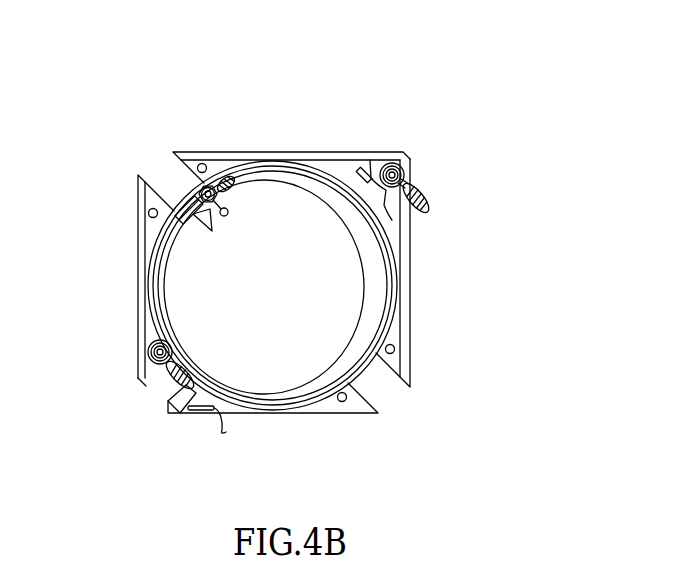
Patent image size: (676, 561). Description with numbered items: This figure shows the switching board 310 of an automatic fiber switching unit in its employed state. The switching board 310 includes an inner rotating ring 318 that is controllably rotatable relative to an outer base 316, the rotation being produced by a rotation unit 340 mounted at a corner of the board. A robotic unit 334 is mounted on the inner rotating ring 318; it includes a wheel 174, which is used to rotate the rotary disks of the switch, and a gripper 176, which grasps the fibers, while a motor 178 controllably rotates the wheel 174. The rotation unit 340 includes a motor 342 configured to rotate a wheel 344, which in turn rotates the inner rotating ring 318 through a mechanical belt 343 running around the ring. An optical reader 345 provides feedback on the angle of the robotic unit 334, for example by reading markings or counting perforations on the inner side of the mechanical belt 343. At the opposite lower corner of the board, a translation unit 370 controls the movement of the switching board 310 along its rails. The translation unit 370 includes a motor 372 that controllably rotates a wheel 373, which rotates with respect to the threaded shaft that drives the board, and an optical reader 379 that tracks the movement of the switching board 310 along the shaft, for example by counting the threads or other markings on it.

The switching board 310 is at (470, 73).
The outer base 316 is at (230, 178).
The inner rotating ring 318 is at (338, 207).
The robotic unit 334 is at (192, 199).
The wheel 174 is at (218, 226).
The gripper 176 is at (202, 226).
The motor 178 is at (222, 207).
The rotation unit 340 is at (431, 237).
The motor 342 is at (434, 194).
The mechanical belt 343 is at (336, 158).
The wheel 344 is at (404, 168).
The optical reader 345 is at (365, 167).
The translation unit 370 is at (157, 395).
The motor 372 is at (165, 375).
The wheel 373 is at (149, 347).
The optical reader 379 is at (195, 413).